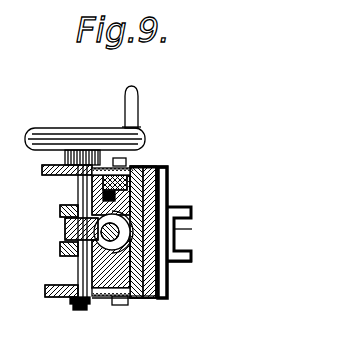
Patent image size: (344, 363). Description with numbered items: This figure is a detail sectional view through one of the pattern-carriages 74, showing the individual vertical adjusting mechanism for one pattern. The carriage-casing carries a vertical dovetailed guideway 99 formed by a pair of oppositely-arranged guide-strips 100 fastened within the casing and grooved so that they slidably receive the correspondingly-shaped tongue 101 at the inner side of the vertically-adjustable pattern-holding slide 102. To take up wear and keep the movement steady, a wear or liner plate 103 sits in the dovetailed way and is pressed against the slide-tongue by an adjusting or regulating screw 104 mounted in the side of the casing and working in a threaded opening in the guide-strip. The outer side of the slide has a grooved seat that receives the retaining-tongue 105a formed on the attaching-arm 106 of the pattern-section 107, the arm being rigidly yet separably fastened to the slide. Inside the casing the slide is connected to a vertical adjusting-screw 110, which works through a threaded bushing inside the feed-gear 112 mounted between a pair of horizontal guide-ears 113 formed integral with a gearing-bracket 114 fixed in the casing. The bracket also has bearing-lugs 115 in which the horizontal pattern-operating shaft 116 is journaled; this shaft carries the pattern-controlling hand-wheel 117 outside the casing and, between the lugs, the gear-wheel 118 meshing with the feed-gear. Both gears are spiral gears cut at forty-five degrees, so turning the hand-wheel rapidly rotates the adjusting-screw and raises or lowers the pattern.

The pattern-carriage 74 is at (46, 296).
The vertical dovetailed guideway 99 is at (150, 178).
The guide-strip 100 is at (148, 164).
The tongue 101 is at (167, 182).
The pattern-holding slide 102 is at (140, 300).
The wear or liner plate 103 is at (140, 172).
The adjusting or regulating screw 104 is at (119, 158).
The retaining-tongue 105a is at (168, 229).
The attaching-arm 106 is at (186, 313).
The pattern-section 107 is at (168, 206).
The adjusting-screw 110 is at (88, 260).
The feed-gear 112 is at (168, 206).
The guide-ear 113 is at (170, 262).
The gearing-bracket 114 is at (77, 203).
The bearing-lug 115 is at (63, 210).
The pattern-operating shaft 116 is at (80, 308).
The pattern-controlling hand-wheel 117 is at (68, 131).
The gear-wheel 118 is at (65, 228).